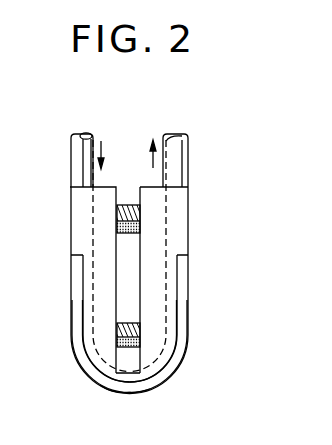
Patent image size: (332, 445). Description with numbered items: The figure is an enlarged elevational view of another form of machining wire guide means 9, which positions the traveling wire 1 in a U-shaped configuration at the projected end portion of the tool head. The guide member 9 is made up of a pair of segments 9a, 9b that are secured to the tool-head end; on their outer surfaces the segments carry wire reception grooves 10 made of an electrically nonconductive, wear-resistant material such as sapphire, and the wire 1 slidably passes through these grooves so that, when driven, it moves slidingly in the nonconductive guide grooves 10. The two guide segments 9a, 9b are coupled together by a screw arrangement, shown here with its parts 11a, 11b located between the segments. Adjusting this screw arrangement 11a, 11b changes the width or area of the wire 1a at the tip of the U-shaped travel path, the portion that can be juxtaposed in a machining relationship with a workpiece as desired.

The traveling wire 1 is at (72, 160).
The wire tip portion 1a is at (118, 388).
The machining wire guide means 9 is at (243, 310).
The guide segment 9a is at (100, 340).
The guide segment 9b is at (150, 343).
The wire reception groove 10 is at (167, 212).
The screw arrangement element 11a is at (126, 228).
The screw arrangement element 11b is at (130, 344).